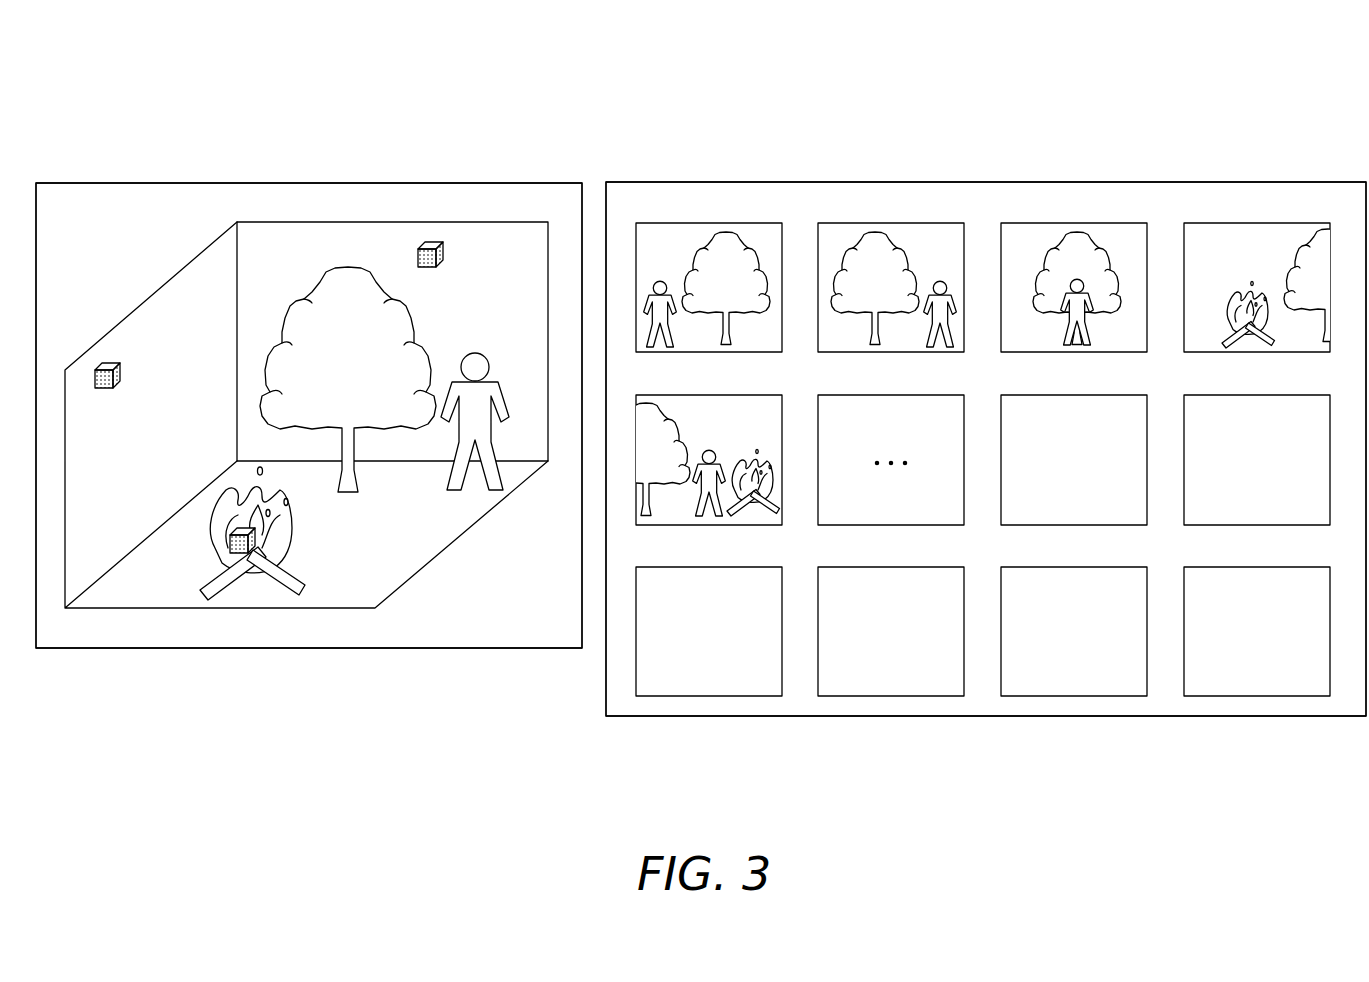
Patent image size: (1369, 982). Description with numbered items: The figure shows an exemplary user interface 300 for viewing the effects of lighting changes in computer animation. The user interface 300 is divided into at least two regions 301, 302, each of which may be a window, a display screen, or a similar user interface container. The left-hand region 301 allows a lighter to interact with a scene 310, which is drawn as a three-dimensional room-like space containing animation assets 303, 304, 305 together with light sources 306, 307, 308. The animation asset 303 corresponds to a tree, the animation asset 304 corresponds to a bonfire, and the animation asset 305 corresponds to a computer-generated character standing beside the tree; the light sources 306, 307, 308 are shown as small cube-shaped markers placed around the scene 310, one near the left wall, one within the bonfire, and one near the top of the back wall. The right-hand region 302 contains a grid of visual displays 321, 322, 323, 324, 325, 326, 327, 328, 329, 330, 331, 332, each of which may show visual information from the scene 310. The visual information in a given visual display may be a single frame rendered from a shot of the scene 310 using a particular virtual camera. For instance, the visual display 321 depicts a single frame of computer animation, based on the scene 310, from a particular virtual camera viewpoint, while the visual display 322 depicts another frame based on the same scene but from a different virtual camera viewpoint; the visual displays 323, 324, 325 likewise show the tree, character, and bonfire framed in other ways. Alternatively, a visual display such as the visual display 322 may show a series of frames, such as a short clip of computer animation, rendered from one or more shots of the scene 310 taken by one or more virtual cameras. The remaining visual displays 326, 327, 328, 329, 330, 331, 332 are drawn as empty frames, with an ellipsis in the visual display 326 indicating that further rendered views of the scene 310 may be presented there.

The user interface 300 is at (1191, 85).
The region 301 is at (313, 183).
The region 302 is at (990, 183).
The animation asset 303 is at (405, 306).
The animation asset 304 is at (292, 540).
The animation asset 305 is at (478, 355).
The light source 306 is at (108, 363).
The light source 307 is at (230, 538).
The light source 308 is at (440, 240).
The scene 310 is at (135, 243).
The visual display 321 is at (764, 223).
The visual display 322 is at (946, 223).
The visual display 323 is at (1129, 223).
The visual display 324 is at (1312, 223).
The visual display 325 is at (764, 395).
The visual display 326 is at (946, 395).
The visual display 327 is at (1129, 395).
The visual display 328 is at (1312, 395).
The visual display 329 is at (764, 567).
The visual display 330 is at (946, 567).
The visual display 331 is at (1129, 567).
The visual display 332 is at (1312, 567).